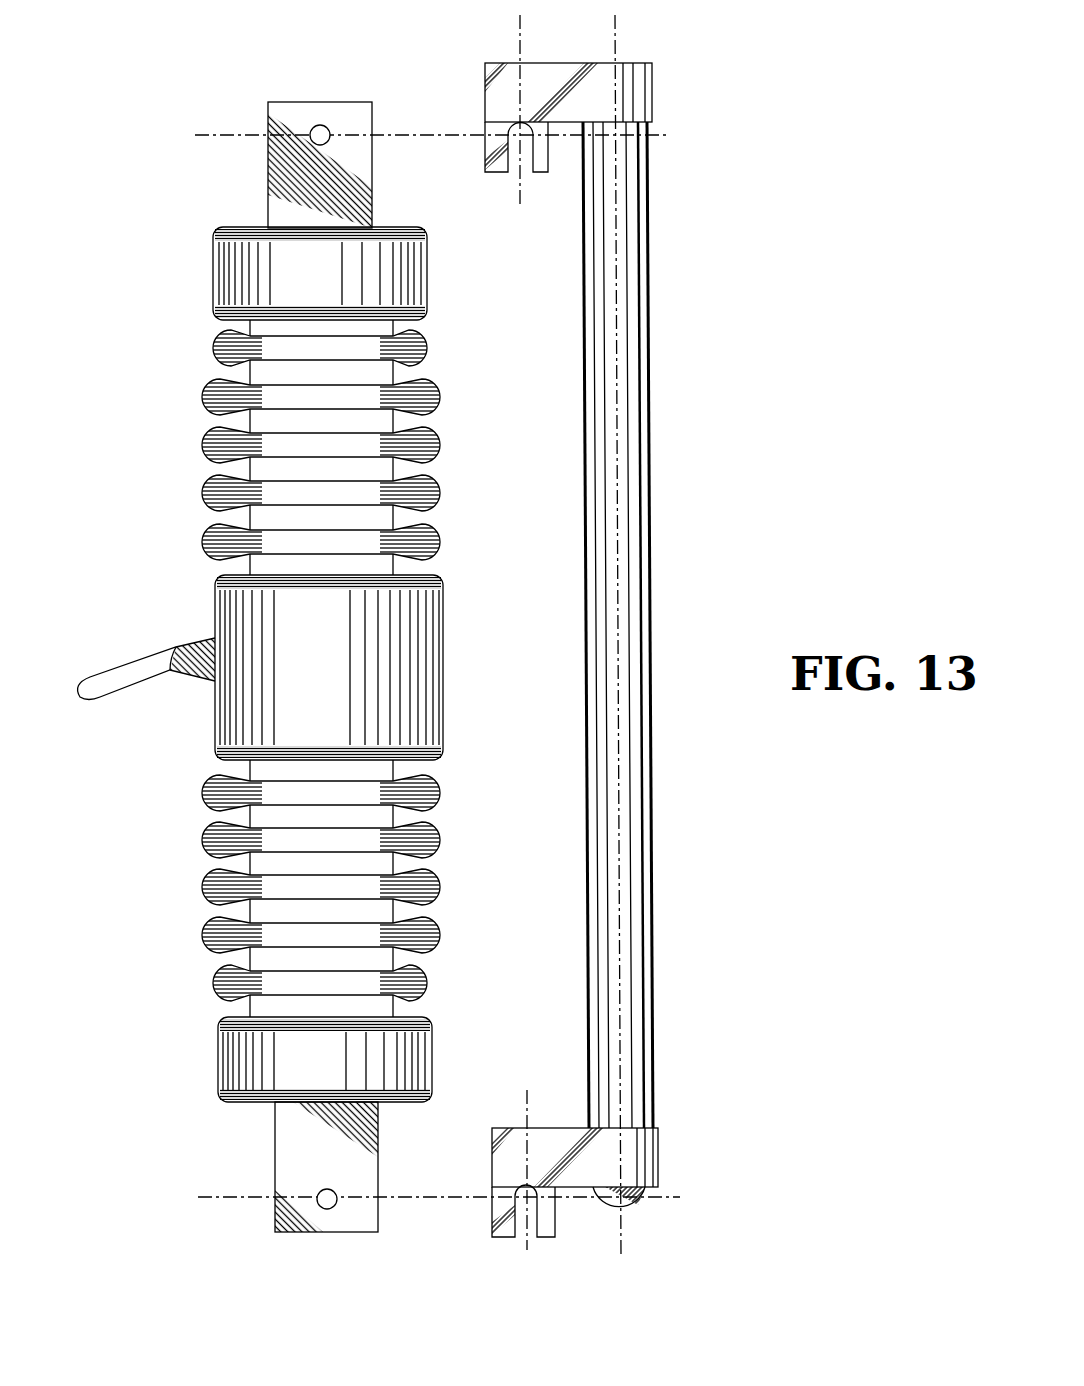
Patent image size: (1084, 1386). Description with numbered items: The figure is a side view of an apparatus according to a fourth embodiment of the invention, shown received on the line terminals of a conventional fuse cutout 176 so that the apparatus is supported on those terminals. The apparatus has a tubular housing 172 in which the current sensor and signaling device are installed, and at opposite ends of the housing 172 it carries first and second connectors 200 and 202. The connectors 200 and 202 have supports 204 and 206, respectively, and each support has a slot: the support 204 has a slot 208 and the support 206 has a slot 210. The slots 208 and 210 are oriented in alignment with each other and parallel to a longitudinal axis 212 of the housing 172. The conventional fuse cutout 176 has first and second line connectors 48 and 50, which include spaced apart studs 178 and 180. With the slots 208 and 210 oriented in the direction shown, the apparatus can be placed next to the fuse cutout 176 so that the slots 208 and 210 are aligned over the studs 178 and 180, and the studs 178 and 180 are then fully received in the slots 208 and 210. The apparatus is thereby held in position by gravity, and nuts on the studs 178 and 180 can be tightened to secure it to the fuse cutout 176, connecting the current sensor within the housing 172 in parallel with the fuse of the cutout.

The first line connector 48 is at (268, 122).
The second line connector 50 is at (274, 1210).
The tubular housing 172 is at (671, 635).
The conventional fuse cutout 176 is at (172, 246).
The stud 178 is at (313, 140).
The stud 180 is at (320, 1192).
The first connector 200 is at (547, 130).
The second connector 202 is at (546, 1186).
The support 204 is at (497, 150).
The support 206 is at (500, 1215).
The slot 208 is at (511, 180).
The slot 210 is at (532, 1252).
The longitudinal axis 212 is at (620, 470).